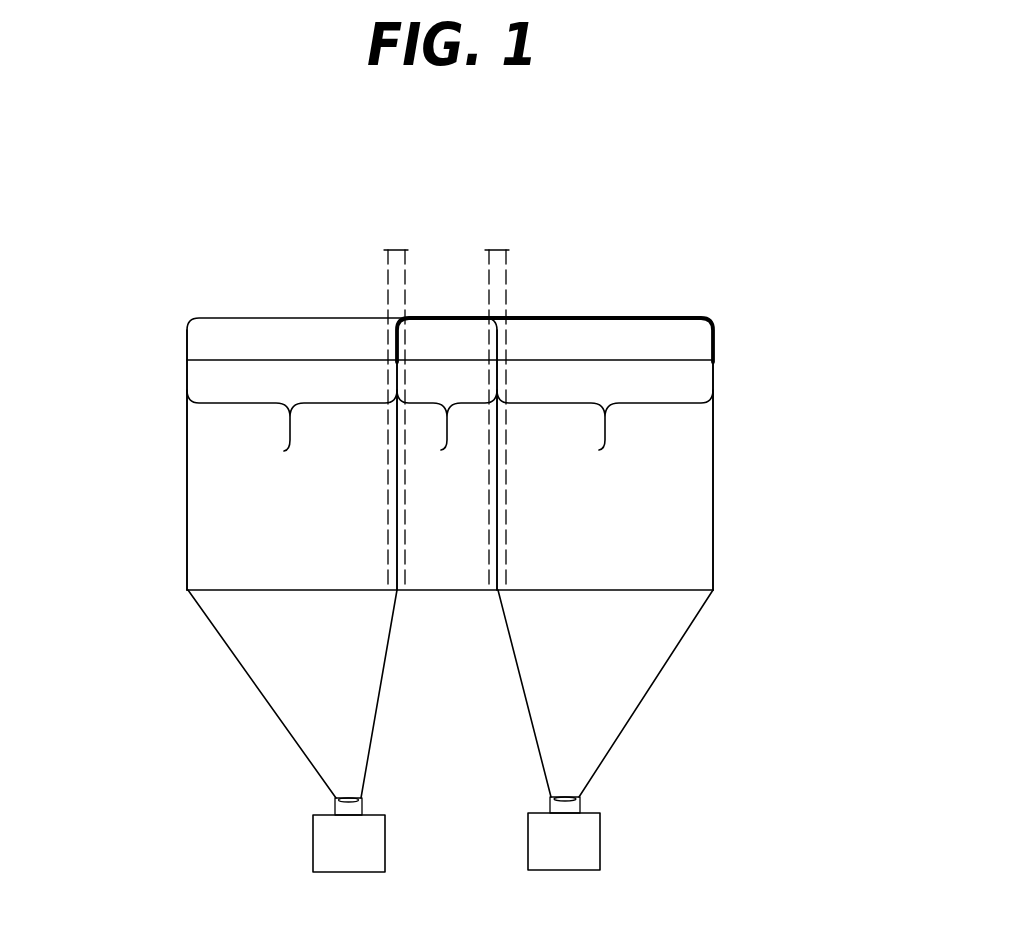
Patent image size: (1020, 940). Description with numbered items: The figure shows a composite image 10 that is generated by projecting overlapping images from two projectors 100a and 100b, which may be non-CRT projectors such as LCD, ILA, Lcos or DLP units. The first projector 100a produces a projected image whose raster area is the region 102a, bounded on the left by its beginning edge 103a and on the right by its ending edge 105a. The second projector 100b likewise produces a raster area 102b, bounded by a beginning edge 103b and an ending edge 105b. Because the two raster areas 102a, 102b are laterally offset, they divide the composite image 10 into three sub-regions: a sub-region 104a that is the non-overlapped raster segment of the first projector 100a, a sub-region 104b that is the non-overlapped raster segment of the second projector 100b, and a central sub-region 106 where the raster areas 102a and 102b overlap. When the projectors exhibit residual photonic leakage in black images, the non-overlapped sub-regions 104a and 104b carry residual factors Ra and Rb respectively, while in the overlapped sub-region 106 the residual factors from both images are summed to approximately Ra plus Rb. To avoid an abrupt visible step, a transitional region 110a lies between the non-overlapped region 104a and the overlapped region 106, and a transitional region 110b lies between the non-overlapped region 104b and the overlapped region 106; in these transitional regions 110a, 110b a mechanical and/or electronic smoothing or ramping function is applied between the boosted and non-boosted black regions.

The composite image 10 is at (449, 372).
The first projector 100a is at (313, 828).
The second projector 100b is at (600, 828).
The image raster area of first projector 102a is at (333, 318).
The image raster area of second projector 102b is at (565, 318).
The beginning edge of raster area 102a 103a is at (187, 447).
The beginning edge of raster area 102b 103b is at (397, 527).
The non-overlapped raster segment of first projector 104a is at (292, 442).
The non-overlapped raster segment of second projector 104b is at (605, 441).
The ending edge of raster area 102a 105a is at (498, 527).
The ending edge of raster area 102b 105b is at (714, 443).
The overlapped raster segment 106 is at (447, 441).
The first transitional region 110a is at (396, 250).
The second transitional region 110b is at (495, 250).